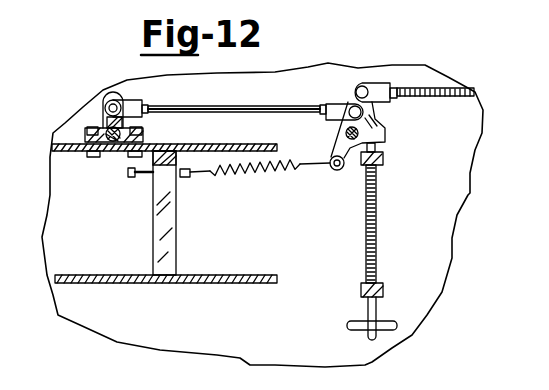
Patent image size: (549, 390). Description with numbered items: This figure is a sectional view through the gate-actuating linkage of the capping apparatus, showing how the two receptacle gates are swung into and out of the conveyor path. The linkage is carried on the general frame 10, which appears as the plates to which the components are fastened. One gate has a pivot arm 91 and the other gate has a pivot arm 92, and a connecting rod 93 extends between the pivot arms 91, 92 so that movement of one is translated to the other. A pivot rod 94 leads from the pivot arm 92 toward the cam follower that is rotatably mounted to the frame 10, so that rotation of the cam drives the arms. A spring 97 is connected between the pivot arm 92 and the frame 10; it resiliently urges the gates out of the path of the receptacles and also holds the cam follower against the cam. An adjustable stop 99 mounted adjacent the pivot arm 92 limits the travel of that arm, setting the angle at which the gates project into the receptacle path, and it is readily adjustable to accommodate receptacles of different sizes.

The frame 10 is at (92, 270).
The pivot arm 91 is at (113, 92).
The pivot arm 92 is at (357, 85).
The connecting rod 93 is at (238, 107).
The pivot rod 94 is at (440, 88).
The spring 97 is at (247, 177).
The adjustable stop 99 is at (378, 220).